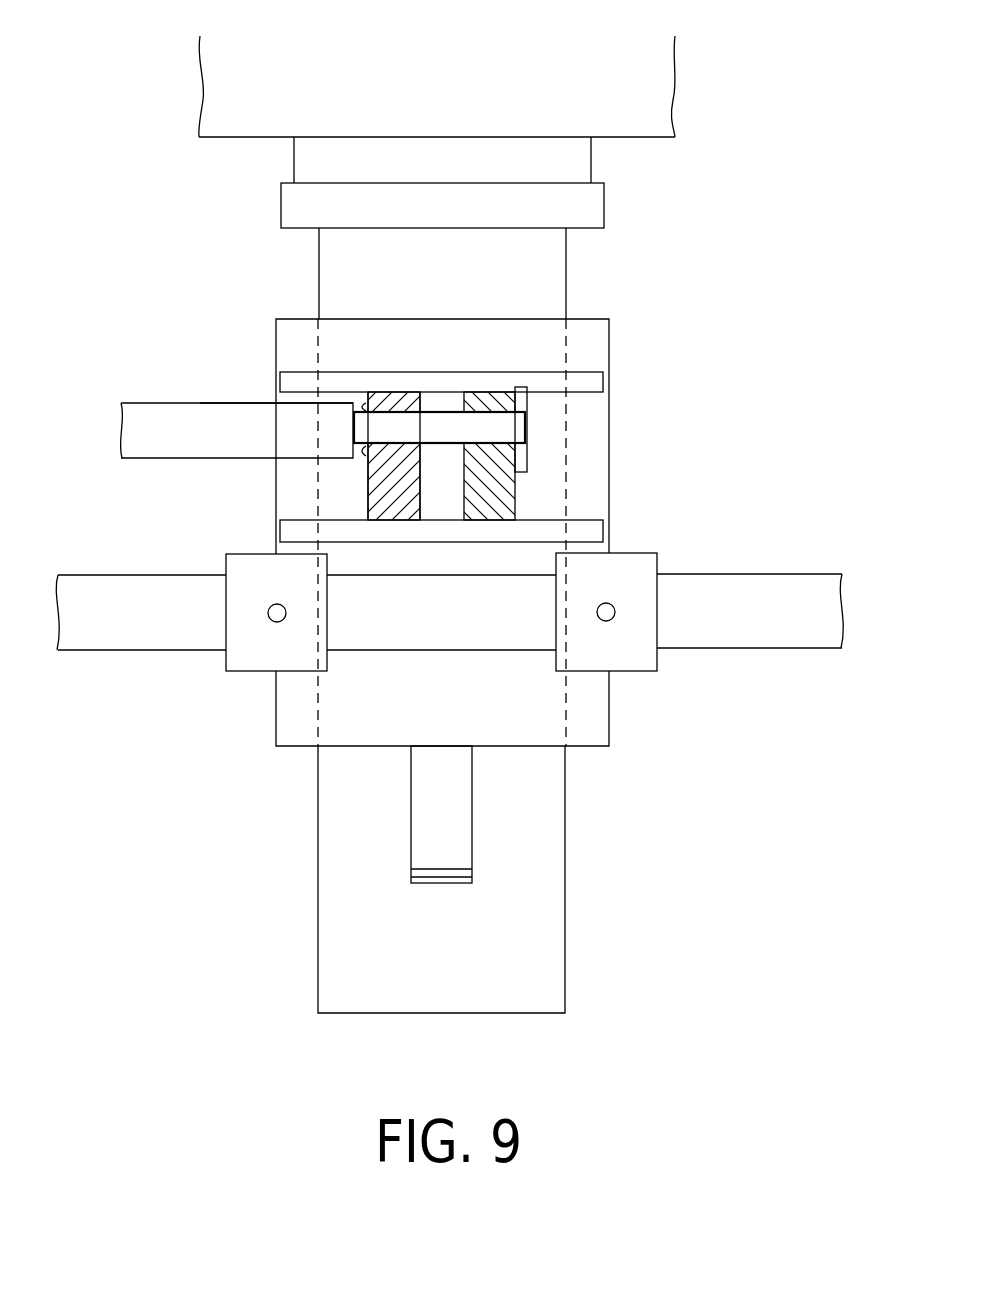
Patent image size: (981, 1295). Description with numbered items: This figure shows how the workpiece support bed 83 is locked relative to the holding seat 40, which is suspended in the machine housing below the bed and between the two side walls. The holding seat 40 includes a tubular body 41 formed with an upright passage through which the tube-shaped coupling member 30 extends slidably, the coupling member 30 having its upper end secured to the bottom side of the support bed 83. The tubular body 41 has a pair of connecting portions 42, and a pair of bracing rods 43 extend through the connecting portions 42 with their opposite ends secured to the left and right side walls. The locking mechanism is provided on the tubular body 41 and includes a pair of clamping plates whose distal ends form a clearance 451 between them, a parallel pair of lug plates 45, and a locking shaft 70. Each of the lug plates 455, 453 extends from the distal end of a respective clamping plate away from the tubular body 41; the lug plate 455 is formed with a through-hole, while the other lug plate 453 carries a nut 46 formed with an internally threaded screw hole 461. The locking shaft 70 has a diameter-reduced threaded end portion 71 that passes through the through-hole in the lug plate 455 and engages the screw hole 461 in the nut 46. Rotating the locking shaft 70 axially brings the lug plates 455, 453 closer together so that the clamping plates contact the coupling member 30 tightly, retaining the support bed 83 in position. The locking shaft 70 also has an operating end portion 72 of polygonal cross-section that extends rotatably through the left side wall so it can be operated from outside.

The support bed 83 is at (652, 103).
The coupling member 30 is at (567, 255).
The tubular body 41 is at (567, 333).
The holding seat 40 is at (276, 337).
The lug plates 45 is at (402, 393).
The lug plate 455 is at (375, 461).
The lug plate 453 is at (388, 497).
The nut 46 is at (483, 407).
The clearance 451 is at (443, 495).
The screw hole 461 is at (527, 403).
The threaded end portion 71 is at (522, 425).
The locking shaft 70 is at (147, 403).
The operating end portion 72 is at (253, 411).
The connecting portions 42 is at (648, 575).
The bracing rods 43 is at (730, 638).